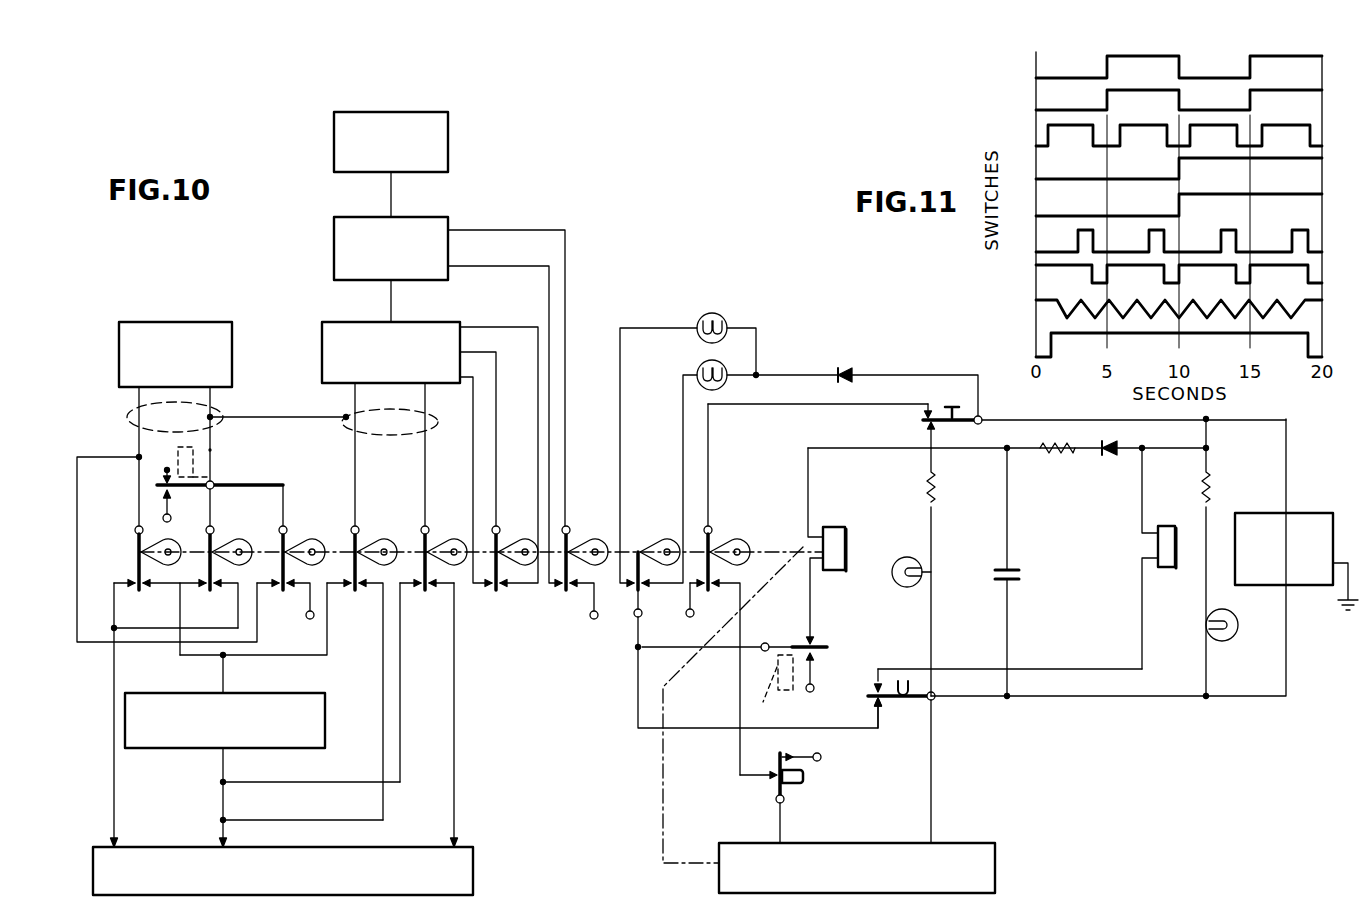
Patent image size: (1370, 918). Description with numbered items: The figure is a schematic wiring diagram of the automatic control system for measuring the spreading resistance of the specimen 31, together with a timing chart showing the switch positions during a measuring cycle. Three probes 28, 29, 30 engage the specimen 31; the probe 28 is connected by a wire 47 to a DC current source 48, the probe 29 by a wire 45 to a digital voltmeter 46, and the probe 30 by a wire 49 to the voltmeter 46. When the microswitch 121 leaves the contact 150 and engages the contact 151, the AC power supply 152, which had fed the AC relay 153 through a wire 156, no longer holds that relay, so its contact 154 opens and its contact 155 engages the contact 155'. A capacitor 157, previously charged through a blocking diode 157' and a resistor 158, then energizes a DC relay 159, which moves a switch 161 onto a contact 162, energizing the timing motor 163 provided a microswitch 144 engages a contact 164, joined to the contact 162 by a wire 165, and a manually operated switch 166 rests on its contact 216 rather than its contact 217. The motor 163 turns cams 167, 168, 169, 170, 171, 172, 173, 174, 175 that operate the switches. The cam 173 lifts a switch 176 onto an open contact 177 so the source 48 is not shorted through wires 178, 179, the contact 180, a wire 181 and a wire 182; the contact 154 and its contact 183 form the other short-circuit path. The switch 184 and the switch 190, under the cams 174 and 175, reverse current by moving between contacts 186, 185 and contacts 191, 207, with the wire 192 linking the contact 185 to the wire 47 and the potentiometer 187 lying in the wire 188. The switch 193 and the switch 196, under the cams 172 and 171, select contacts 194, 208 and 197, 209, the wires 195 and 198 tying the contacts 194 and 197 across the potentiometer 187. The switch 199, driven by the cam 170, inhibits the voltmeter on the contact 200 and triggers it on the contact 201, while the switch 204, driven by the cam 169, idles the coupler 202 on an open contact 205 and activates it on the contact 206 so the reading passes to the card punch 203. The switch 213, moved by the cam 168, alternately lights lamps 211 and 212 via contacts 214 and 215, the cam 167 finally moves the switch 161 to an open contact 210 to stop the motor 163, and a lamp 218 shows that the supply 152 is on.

In FIG. 10, the card punch 203 is at (334, 133).
In FIG. 10, the coupler 202 is at (334, 247).
In FIG. 10, the digital voltmeter 46 is at (340, 322).
In FIG. 10, the DC current source 48 is at (152, 322).
In FIG. 10, the wire 182 is at (138, 398).
In FIG. 10, the wire 178 is at (211, 452).
In FIG. 10, the AC relay 153 is at (210, 472).
In FIG. 10, the contact 183 is at (163, 479).
In FIG. 10, the contact of relay 153 154 is at (173, 492).
In FIG. 10, the wire 179 is at (284, 498).
In FIG. 10, the switch 190 is at (136, 566).
In FIG. 11, the switch 190 is at (1160, 101).
In FIG. 10, the cam 175 is at (170, 541).
In FIG. 10, the contact 191 is at (133, 581).
In FIG. 10, the contact 207 is at (153, 588).
In FIG. 10, the switch 184 is at (212, 572).
In FIG. 11, the switch 184 is at (1160, 67).
In FIG. 10, the cam 174 is at (240, 541).
In FIG. 10, the contact 186 is at (199, 588).
In FIG. 10, the contact 185 is at (222, 579).
In FIG. 10, the switch 176 is at (292, 541).
In FIG. 11, the switch 176 is at (1160, 134).
In FIG. 10, the cam 173 is at (315, 540).
In FIG. 10, the contact 180 is at (270, 588).
In FIG. 10, the wire 181 is at (90, 645).
In FIG. 10, the open contact 177 is at (298, 590).
In FIG. 10, the switch 193 is at (366, 541).
In FIG. 11, the switch 193 is at (1160, 168).
In FIG. 10, the cam 172 is at (388, 540).
In FIG. 10, the contact 194 is at (347, 588).
In FIG. 10, the contact 208 is at (368, 590).
In FIG. 10, the switch 196 is at (436, 541).
In FIG. 11, the switch 196 is at (1160, 205).
In FIG. 10, the cam 171 is at (457, 536).
In FIG. 10, the contact 197 is at (414, 588).
In FIG. 10, the contact 209 is at (438, 590).
In FIG. 10, the switch 199 is at (506, 541).
In FIG. 11, the switch 199 is at (1160, 241).
In FIG. 10, the cam 170 is at (526, 536).
In FIG. 10, the contact 200 is at (488, 590).
In FIG. 10, the contact 201 is at (508, 590).
In FIG. 10, the switch 204 is at (582, 536).
In FIG. 11, the switch 204 is at (1160, 276).
In FIG. 10, the cam 169 is at (601, 536).
In FIG. 10, the contact 206 is at (556, 590).
In FIG. 10, the open contact 205 is at (580, 588).
In FIG. 10, the lamp 211 is at (710, 313).
In FIG. 10, the lamp 212 is at (700, 364).
In FIG. 10, the cam 168 is at (664, 538).
In FIG. 10, the contact 214 is at (628, 588).
In FIG. 10, the contact 215 is at (650, 588).
In FIG. 10, the switch 213 is at (636, 616).
In FIG. 11, the switch 213 is at (1160, 310).
In FIG. 10, the switch 161 is at (714, 537).
In FIG. 11, the switch 161 is at (1160, 345).
In FIG. 10, the cam 167 is at (746, 545).
In FIG. 10, the open contact 210 is at (698, 590).
In FIG. 10, the contact 162 is at (722, 585).
In FIG. 10, the wire 165 is at (740, 766).
In FIG. 10, the contact 164 is at (762, 773).
In FIG. 10, the microswitch 144 is at (776, 799).
In FIG. 10, the timing motor 163 is at (967, 843).
In FIG. 10, the DC relay 159 is at (836, 530).
In FIG. 10, the contact of relay 153 155 is at (734, 655).
In FIG. 10, the contact 155' is at (835, 630).
In FIG. 10, the contact 150 is at (876, 691).
In FIG. 10, the contact 151 is at (876, 704).
In FIG. 10, the microswitch 121 is at (906, 698).
In FIG. 10, the manually operated switch 166 is at (938, 418).
In FIG. 10, the contact 216 is at (923, 416).
In FIG. 10, the contact 217 is at (934, 432).
In FIG. 10, the capacitor 157 is at (1022, 572).
In FIG. 10, the resistor 158 is at (1069, 452).
In FIG. 10, the blocking diode 157' is at (1093, 438).
In FIG. 10, the lamp 218 is at (1229, 640).
In FIG. 10, the wire 156 is at (1148, 699).
In FIG. 10, the AC power supply 152 is at (1305, 515).
In FIG. 10, the potentiometer 187 is at (181, 750).
In FIG. 10, the wire 195 is at (314, 658).
In FIG. 10, the wire 192 is at (155, 630).
In FIG. 10, the wire 188 is at (222, 772).
In FIG. 10, the wire 198 is at (399, 780).
In FIG. 10, the wire 45 is at (268, 822).
In FIG. 10, the wire 47 is at (113, 772).
In FIG. 10, the wire 49 is at (456, 788).
In FIG. 10, the probe 28 is at (111, 845).
In FIG. 10, the probe 29 is at (220, 845).
In FIG. 10, the probe 30 is at (458, 842).
In FIG. 10, the specimen 31 is at (345, 894).